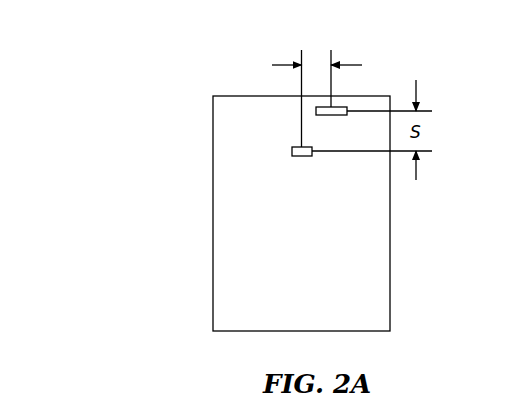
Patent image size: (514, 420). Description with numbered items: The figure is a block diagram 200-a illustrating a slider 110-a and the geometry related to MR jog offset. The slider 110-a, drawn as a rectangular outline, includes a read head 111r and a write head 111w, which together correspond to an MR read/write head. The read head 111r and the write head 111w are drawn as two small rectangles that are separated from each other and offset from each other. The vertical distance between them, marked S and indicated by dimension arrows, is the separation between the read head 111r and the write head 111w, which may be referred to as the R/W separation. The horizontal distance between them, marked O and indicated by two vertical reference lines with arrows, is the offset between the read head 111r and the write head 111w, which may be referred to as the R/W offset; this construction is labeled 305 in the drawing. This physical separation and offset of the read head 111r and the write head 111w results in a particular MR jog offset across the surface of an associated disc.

The slider 110-a is at (213, 212).
The write head 111w is at (338, 106).
The read head 111r is at (292, 147).
The offset reference lines 305 is at (317, 85).
The block diagram 200-a is at (121, 365).